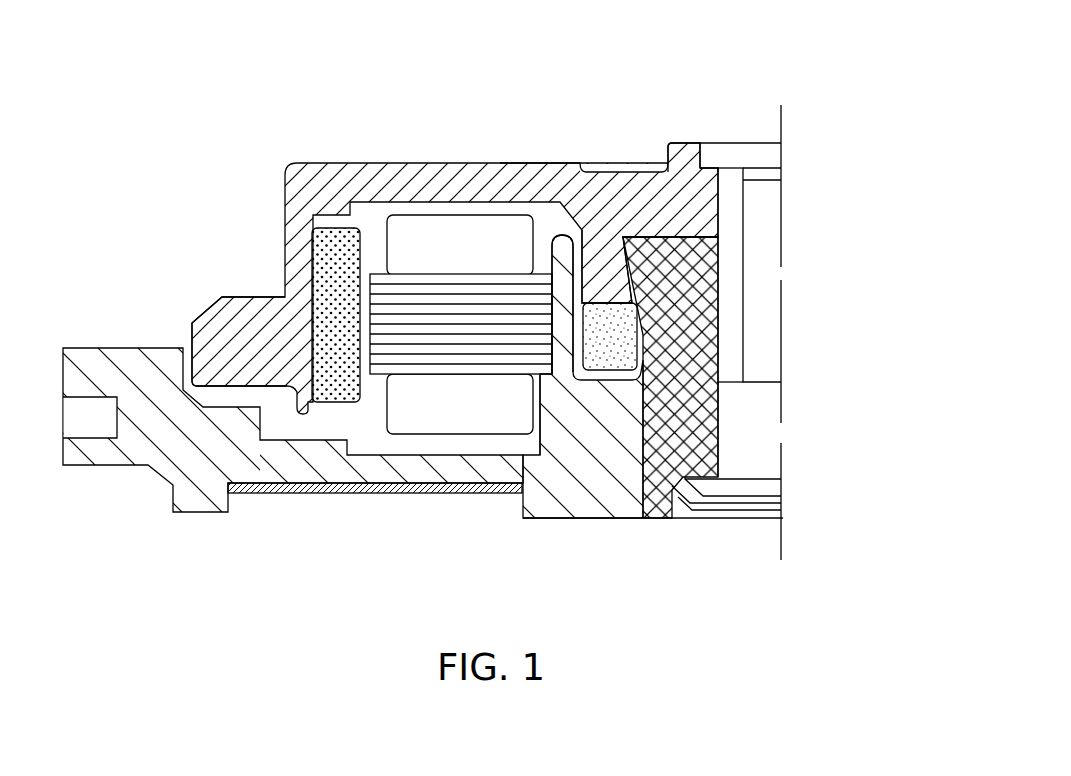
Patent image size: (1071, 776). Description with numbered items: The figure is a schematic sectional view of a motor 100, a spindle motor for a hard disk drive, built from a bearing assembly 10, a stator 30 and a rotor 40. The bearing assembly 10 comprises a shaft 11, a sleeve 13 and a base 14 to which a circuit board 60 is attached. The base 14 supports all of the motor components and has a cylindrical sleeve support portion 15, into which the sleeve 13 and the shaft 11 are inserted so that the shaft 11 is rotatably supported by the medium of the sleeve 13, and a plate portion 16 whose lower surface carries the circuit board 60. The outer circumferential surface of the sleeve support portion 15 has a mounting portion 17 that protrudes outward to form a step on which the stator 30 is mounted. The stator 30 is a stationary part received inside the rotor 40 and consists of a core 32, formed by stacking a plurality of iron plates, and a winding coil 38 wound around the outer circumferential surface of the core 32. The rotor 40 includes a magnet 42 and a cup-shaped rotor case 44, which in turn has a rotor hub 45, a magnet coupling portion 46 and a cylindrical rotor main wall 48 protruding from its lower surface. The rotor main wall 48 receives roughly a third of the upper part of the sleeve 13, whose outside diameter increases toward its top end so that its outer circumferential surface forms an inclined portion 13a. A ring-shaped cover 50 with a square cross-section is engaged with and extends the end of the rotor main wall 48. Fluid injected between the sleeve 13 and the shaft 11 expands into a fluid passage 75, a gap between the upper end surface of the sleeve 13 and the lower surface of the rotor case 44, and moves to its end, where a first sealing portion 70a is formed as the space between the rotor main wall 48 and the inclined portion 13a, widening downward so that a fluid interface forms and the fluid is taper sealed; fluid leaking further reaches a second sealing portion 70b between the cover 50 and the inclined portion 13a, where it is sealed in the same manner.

The motor 100 is at (262, 120).
The bearing assembly 10 is at (748, 549).
The shaft 11 is at (735, 176).
The sleeve 13 is at (722, 407).
The inclined portion 13a is at (667, 232).
The base 14 is at (609, 496).
The sleeve support portion 15 is at (578, 427).
The plate portion 16 is at (413, 473).
The mounting portion 17 is at (540, 378).
The stator 30 is at (547, 215).
The core 32 is at (378, 333).
The winding coil 38 is at (442, 232).
The rotor 40 is at (330, 163).
The magnet 42 is at (322, 240).
The rotor case 44 is at (538, 163).
The rotor hub 45 is at (680, 150).
The magnet coupling portion 46 is at (298, 268).
The rotor main wall 48 is at (600, 268).
The cover 50 is at (670, 483).
The circuit board 60 is at (470, 487).
The first sealing portion 70a is at (653, 247).
The second sealing portion 70b is at (660, 342).
The fluid passage 75 is at (708, 222).